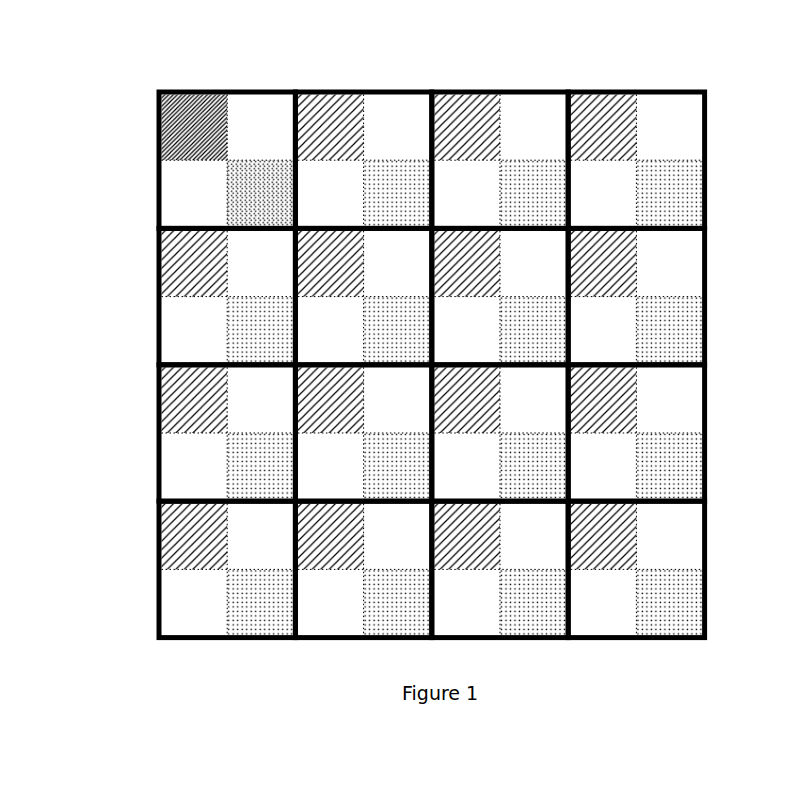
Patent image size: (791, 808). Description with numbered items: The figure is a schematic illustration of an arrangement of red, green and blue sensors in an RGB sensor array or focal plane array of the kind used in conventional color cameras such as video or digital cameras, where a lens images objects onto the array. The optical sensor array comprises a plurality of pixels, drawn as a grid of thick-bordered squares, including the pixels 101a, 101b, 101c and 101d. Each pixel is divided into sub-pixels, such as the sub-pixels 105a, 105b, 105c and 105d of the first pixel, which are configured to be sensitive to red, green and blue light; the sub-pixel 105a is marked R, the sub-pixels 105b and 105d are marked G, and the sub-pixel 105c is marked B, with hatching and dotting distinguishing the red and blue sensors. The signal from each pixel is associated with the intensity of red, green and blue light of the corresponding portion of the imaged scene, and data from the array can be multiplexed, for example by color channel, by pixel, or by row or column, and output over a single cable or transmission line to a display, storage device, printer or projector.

The pixel 101a is at (183, 158).
The pixel 101b is at (363, 90).
The pixel 101c is at (500, 90).
The pixel 101d is at (157, 295).
The sub-pixel 105a is at (180, 142).
The sub-pixel 105b is at (178, 200).
The sub-pixel 105c is at (247, 200).
The sub-pixel 105d is at (243, 113).